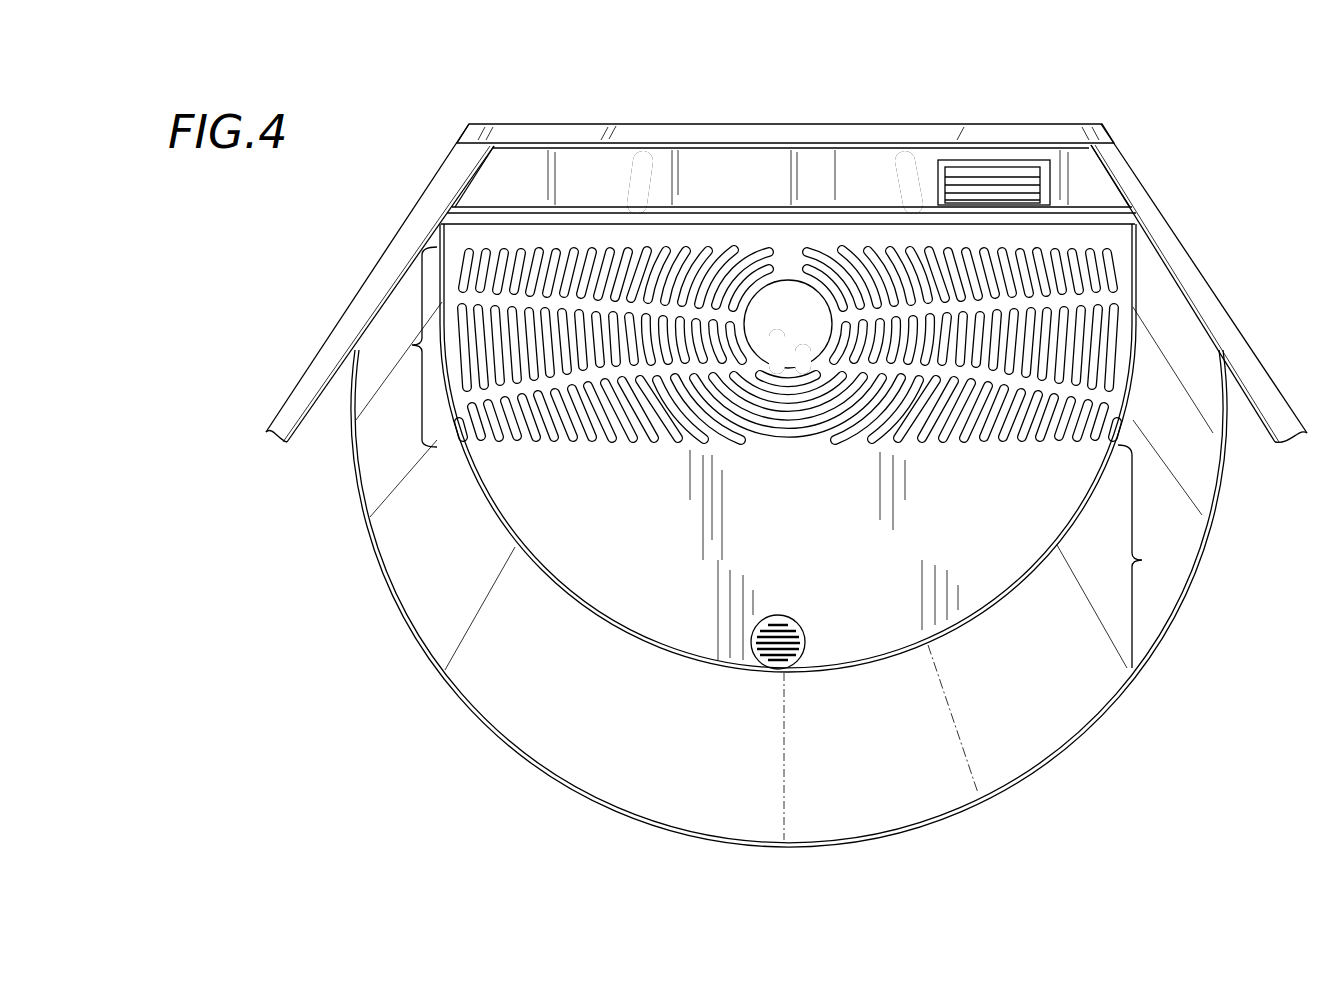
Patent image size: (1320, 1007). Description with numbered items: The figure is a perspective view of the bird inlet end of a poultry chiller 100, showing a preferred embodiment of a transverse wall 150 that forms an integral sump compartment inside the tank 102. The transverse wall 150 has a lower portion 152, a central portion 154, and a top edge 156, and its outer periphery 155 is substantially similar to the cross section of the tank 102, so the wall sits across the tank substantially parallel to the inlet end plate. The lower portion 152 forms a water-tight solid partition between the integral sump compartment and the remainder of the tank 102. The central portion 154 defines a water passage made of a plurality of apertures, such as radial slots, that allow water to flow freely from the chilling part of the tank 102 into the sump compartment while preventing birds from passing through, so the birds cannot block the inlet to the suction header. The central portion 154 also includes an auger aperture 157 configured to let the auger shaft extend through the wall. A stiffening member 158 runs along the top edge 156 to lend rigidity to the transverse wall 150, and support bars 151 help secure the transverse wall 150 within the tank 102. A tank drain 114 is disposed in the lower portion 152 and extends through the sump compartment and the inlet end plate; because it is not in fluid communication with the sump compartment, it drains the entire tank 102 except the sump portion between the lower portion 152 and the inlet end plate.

The poultry chiller 100 is at (511, 100).
The tank 102 is at (1054, 687).
The tank drain 114 is at (804, 604).
The transverse wall 150 is at (352, 600).
The support bars 151 is at (653, 186).
The lower portion 152 is at (1143, 560).
The central portion 154 is at (411, 345).
The outer periphery 155 is at (600, 640).
The top edge 156 is at (597, 202).
The auger aperture 157 is at (834, 282).
The stiffening member 158 is at (782, 212).